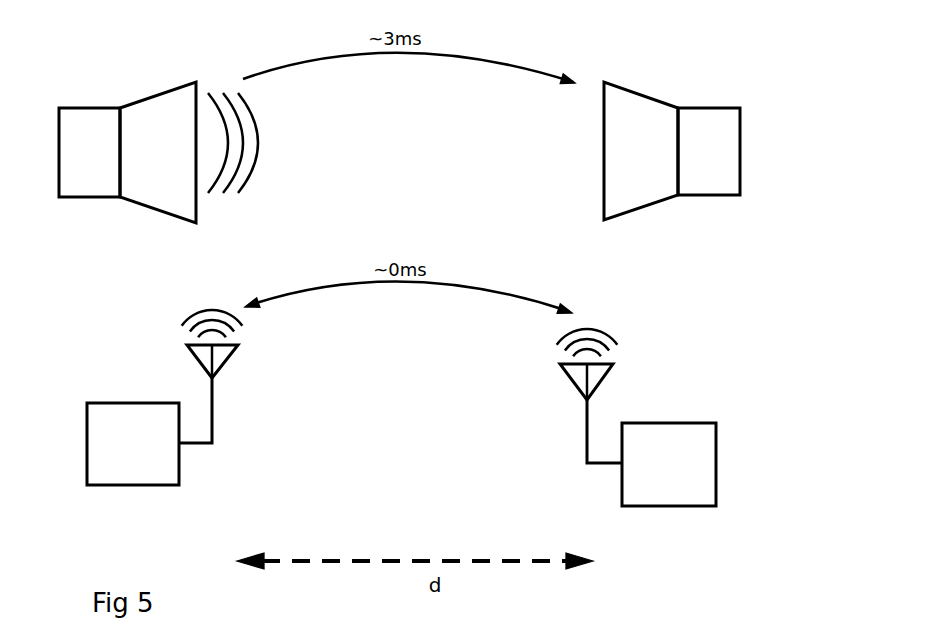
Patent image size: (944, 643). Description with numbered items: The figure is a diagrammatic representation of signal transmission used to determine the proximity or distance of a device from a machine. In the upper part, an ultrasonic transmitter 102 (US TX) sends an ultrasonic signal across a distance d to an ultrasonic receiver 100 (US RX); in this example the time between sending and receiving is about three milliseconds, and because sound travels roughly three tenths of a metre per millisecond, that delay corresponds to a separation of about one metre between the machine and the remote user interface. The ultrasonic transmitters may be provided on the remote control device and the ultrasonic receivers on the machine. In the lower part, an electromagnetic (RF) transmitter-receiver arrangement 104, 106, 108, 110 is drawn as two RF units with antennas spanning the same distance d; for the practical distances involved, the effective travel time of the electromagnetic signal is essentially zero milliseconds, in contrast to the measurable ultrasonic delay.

The ultrasonic receiver 100 is at (688, 117).
The ultrasonic transmitter 102 is at (110, 97).
The electromagnetic (RF) transmitter-receiver arrangement 104 is at (138, 397).
The electromagnetic (RF) transmitter-receiver arrangement 106 is at (103, 400).
The electromagnetic (RF) transmitter-receiver arrangement 108 is at (689, 417).
The electromagnetic (RF) transmitter-receiver arrangement 110 is at (702, 429).